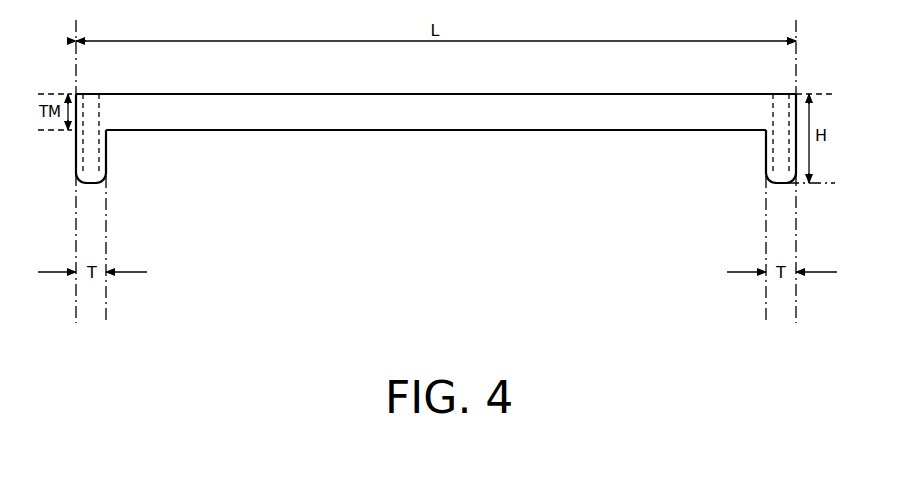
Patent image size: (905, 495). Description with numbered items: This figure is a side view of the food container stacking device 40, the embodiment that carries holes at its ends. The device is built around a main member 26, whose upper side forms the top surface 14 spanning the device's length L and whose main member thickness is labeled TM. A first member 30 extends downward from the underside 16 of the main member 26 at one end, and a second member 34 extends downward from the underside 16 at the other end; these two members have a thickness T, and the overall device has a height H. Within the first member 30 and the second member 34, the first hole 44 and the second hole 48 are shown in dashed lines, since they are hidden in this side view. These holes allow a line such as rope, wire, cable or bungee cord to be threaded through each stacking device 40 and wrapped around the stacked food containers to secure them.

The top surface 14 is at (263, 93).
The underside 16 is at (424, 131).
The main member 26 is at (233, 118).
The first member 30 is at (106, 162).
The second member 34 is at (766, 162).
The food container stacking device 40 is at (610, 193).
The first hole 44 is at (100, 116).
The second hole 48 is at (772, 118).